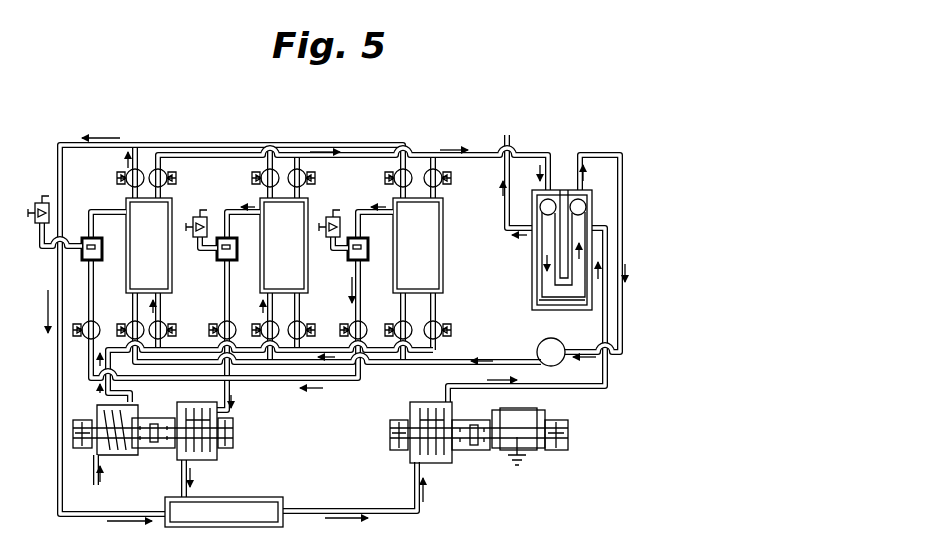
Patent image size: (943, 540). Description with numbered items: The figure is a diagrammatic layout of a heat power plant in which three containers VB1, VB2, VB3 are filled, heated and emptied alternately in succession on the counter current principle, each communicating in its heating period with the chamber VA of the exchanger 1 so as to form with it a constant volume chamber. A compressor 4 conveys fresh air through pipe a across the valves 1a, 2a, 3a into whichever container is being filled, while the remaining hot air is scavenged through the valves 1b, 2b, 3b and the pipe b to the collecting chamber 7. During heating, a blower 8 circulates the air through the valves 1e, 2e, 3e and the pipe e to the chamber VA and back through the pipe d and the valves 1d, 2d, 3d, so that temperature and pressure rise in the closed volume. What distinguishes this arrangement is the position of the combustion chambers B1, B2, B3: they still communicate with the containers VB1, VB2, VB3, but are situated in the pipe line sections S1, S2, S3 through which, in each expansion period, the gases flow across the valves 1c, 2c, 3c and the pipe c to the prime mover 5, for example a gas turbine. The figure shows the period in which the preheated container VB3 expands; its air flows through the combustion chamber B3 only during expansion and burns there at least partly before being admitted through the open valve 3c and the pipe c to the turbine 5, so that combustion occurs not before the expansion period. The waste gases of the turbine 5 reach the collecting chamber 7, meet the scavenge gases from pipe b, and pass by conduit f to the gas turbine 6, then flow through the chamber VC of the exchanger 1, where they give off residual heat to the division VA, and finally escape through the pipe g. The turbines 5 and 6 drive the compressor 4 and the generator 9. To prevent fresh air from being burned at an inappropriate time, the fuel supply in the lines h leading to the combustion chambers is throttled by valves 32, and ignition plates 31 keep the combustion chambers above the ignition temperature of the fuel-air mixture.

The exchanger 1 is at (542, 250).
The compressor 4 is at (115, 458).
The prime mover 5 is at (180, 404).
The gas turbine 6 is at (440, 463).
The collecting chamber 7 is at (224, 512).
The blower 8 is at (540, 343).
The generator 9 is at (546, 414).
The ignition plates 31 is at (96, 243).
The valves 32 is at (40, 203).
The container VB1 is at (149, 253).
The container VB2 is at (284, 253).
The container VB3 is at (418, 253).
The combustion chamber B1 is at (104, 295).
The combustion chamber B2 is at (238, 308).
The combustion chamber B3 is at (371, 292).
The pipe line section S1 is at (99, 283).
The pipe line section S2 is at (241, 283).
The pipe line section S3 is at (374, 281).
The chamber of the exchanger VA is at (548, 285).
The chamber of the exchanger VC is at (540, 300).
The pipe a is at (266, 367).
The pipe b is at (225, 328).
The conduit c is at (224, 431).
The pipe d is at (338, 357).
The pipe e is at (338, 164).
The conduit f is at (444, 373).
The pipe g is at (513, 185).
The lines h is at (342, 252).
The valve 1a is at (166, 319).
The valve 1b is at (116, 178).
The valve 1c is at (84, 320).
The valve 1d is at (126, 320).
The valve 1e is at (174, 178).
The valve 2a is at (304, 320).
The valve 2b is at (255, 178).
The valve 2c is at (221, 320).
The valve 2d is at (261, 319).
The valve 2e is at (312, 178).
The valve 3a is at (441, 319).
The valve 3b is at (388, 178).
The valve 3c is at (350, 308).
The valve 3d is at (396, 320).
The valve 3e is at (447, 178).